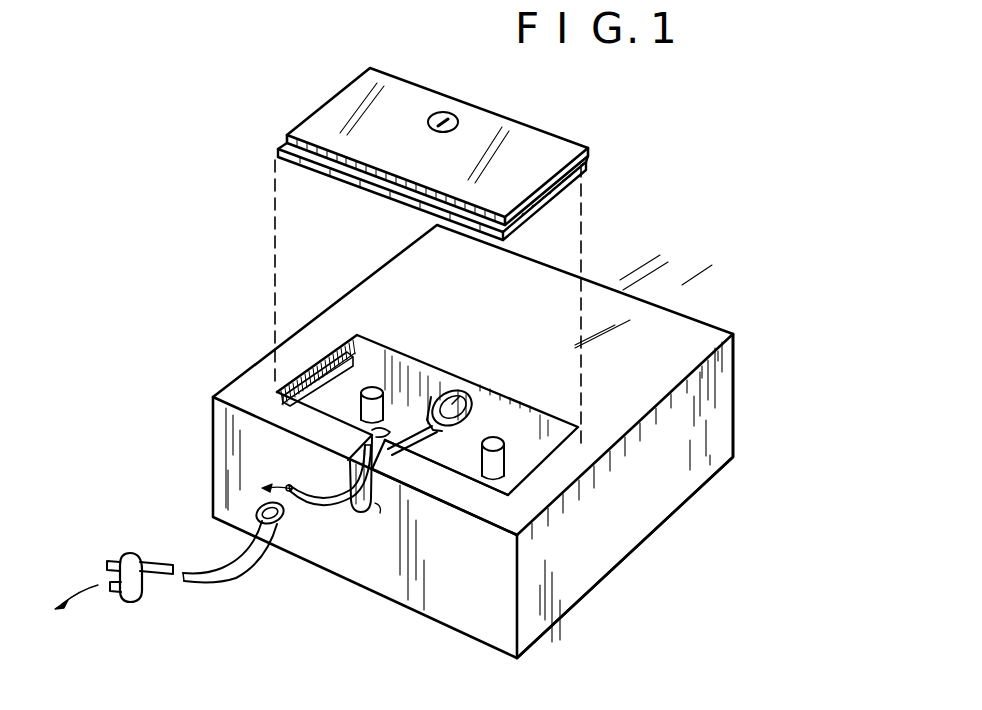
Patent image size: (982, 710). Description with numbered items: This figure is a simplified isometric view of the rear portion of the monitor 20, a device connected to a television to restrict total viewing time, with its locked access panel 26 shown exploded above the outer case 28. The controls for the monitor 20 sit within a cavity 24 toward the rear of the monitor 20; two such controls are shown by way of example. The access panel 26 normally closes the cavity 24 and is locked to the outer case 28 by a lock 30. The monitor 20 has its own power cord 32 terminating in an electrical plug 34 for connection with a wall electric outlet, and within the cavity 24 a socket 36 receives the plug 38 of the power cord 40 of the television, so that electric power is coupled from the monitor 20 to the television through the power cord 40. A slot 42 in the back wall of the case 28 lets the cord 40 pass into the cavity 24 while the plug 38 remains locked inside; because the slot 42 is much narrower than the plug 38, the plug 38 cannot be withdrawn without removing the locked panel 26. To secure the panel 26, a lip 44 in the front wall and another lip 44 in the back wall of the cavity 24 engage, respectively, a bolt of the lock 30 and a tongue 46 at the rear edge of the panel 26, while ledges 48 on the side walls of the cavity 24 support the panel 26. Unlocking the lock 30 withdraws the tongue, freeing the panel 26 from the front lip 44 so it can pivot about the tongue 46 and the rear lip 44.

The monitor 20 is at (740, 392).
The cavity 24 is at (436, 456).
The access panel 26 is at (535, 127).
The outer case 28 is at (714, 460).
The lock 30 is at (465, 118).
The power cord 32 is at (222, 568).
The electrical plug 34 is at (153, 519).
The socket 36 is at (470, 402).
The plug 38 is at (436, 390).
The power cord 40 is at (312, 505).
The slot 42 is at (378, 512).
The lip 44 is at (372, 383).
The tongue 46 is at (282, 150).
The ledges 48 is at (342, 348).